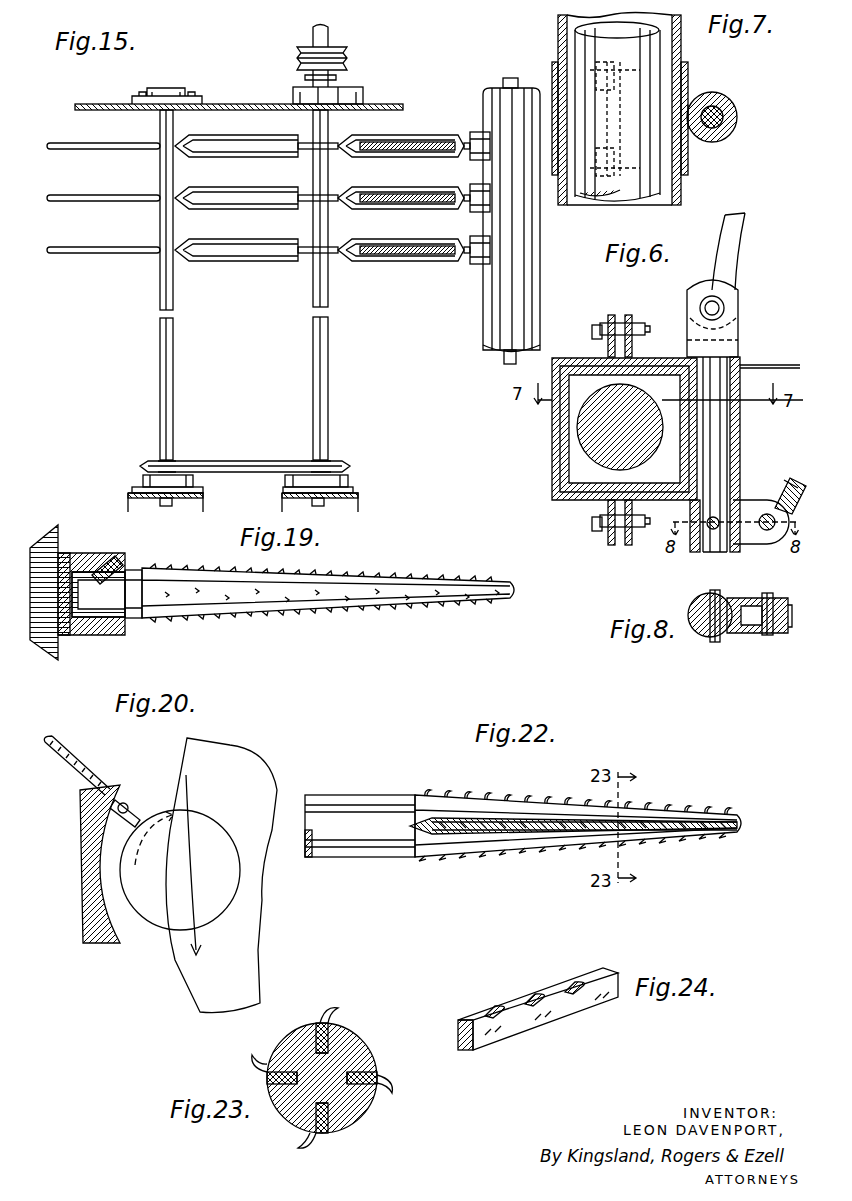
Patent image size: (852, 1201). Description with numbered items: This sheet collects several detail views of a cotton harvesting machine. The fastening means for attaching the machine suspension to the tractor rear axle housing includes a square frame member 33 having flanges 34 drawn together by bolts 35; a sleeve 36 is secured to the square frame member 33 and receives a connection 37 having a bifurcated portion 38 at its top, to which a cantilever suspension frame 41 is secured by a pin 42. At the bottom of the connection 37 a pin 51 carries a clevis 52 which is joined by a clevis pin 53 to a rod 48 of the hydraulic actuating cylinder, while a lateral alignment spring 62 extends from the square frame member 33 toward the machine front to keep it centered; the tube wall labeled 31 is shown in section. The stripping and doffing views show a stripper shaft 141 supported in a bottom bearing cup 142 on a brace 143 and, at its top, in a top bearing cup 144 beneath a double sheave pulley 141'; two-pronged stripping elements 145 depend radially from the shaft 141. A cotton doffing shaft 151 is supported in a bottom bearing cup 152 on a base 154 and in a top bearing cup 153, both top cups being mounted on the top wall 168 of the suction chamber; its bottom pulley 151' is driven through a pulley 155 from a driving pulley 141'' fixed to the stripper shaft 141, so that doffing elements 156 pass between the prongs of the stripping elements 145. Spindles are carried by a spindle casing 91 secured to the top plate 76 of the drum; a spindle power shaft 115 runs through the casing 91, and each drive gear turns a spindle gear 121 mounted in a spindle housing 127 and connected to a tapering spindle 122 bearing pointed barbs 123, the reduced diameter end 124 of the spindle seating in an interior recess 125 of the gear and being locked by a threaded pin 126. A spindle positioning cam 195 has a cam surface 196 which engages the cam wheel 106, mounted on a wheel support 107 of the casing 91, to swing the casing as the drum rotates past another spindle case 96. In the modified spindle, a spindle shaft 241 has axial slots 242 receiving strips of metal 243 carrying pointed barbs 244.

In FIG. 7, the tube 31 is at (558, 33).
In FIG. 6, the tube 31 is at (553, 478).
In FIG. 7, the square frame member 33 is at (556, 70).
In FIG. 6, the square frame member 33 is at (575, 437).
In FIG. 7, the flanges 34 is at (622, 178).
In FIG. 6, the flanges 34 is at (628, 318).
In FIG. 7, the bolts 35 is at (635, 83).
In FIG. 6, the bolts 35 is at (638, 325).
In FIG. 7, the sleeve 36 is at (730, 100).
In FIG. 6, the sleeve 36 is at (742, 442).
In FIG. 7, the connection 37 is at (722, 114).
In FIG. 6, the connection 37 is at (720, 462).
In FIG. 8, the connection 37 is at (698, 635).
In FIG. 6, the bifurcated portion 38 is at (738, 335).
In FIG. 6, the cantilever suspension frame 41 is at (738, 226).
In FIG. 6, the pin 42 is at (722, 304).
In FIG. 6, the rod 48 is at (786, 484).
In FIG. 8, the rod 48 is at (790, 620).
In FIG. 6, the pin 51 is at (712, 530).
In FIG. 8, the pin 51 is at (715, 643).
In FIG. 6, the clevis 52 is at (745, 544).
In FIG. 8, the clevis 52 is at (733, 635).
In FIG. 6, the clevis pin 53 is at (770, 530).
In FIG. 8, the clevis pin 53 is at (767, 636).
In FIG. 6, the lateral alignment spring 62 is at (760, 365).
In FIG. 20, the top plate 76 is at (228, 760).
In FIG. 15, the spindle casing 91 is at (496, 329).
In FIG. 20, the spindle casing 91 is at (120, 882).
In FIG. 20, the spindle case 96 is at (240, 865).
In FIG. 20, the cam wheel 106 is at (125, 800).
In FIG. 20, the wheel support 107 is at (140, 817).
In FIG. 15, the spindle power shaft 115 is at (505, 359).
In FIG. 19, the spindle gear 121 is at (40, 548).
In FIG. 15, the tapering spindle 122 is at (424, 150).
In FIG. 19, the tapering spindle 122 is at (348, 606).
In FIG. 20, the tapering spindle 122 is at (78, 760).
In FIG. 19, the pointed barbs 123 is at (222, 612).
In FIG. 19, the reduced diameter end 124 is at (105, 617).
In FIG. 19, the interior recess 125 is at (82, 578).
In FIG. 19, the threaded pin 126 is at (113, 557).
In FIG. 15, the spindle housing 127 is at (472, 134).
In FIG. 15, the stripper shaft 141 is at (350, 285).
In FIG. 15, the double sheave pulley 141' is at (358, 56).
In FIG. 15, the driving pulley 141'' is at (351, 444).
In FIG. 15, the bottom bearing cup 142 is at (345, 480).
In FIG. 15, the brace 143 is at (358, 508).
In FIG. 15, the top bearing cup 144 is at (350, 92).
In FIG. 15, the two-pronged stripping elements 145 is at (245, 186).
In FIG. 15, the cotton doffing shaft 151 is at (139, 285).
In FIG. 15, the bottom pulley 151' is at (146, 449).
In FIG. 15, the bottom bearing cup 152 is at (145, 480).
In FIG. 15, the top bearing cup 153 is at (178, 93).
In FIG. 15, the base 154 is at (130, 497).
In FIG. 15, the pulley 155 is at (245, 462).
In FIG. 15, the doffing elements 156 is at (70, 196).
In FIG. 15, the top wall 168 is at (222, 104).
In FIG. 20, the spindle positioning cam 195 is at (82, 830).
In FIG. 20, the cam surface 196 is at (120, 940).
In FIG. 22, the spindle shaft 241 is at (370, 857).
In FIG. 23, the spindle shaft 241 is at (355, 1105).
In FIG. 22, the axial slots 242 is at (543, 830).
In FIG. 23, the axial slots 242 is at (280, 1050).
In FIG. 22, the strips of metal 243 is at (478, 830).
In FIG. 23, the strips of metal 243 is at (314, 1028).
In FIG. 24, the strips of metal 243 is at (518, 1028).
In FIG. 22, the pointed barbs 244 is at (470, 797).
In FIG. 23, the pointed barbs 244 is at (340, 1010).
In FIG. 24, the pointed barbs 244 is at (500, 980).